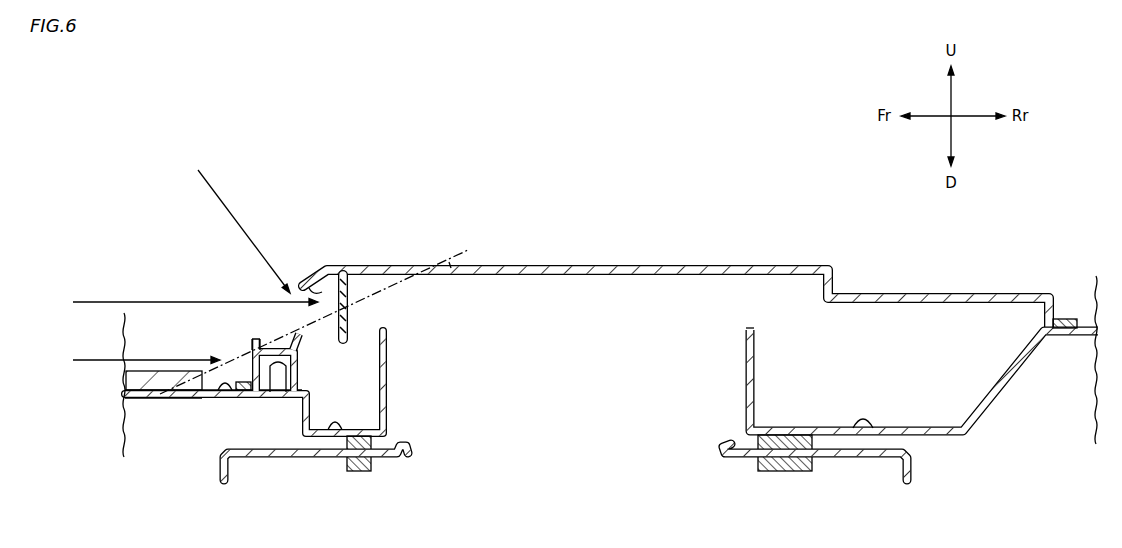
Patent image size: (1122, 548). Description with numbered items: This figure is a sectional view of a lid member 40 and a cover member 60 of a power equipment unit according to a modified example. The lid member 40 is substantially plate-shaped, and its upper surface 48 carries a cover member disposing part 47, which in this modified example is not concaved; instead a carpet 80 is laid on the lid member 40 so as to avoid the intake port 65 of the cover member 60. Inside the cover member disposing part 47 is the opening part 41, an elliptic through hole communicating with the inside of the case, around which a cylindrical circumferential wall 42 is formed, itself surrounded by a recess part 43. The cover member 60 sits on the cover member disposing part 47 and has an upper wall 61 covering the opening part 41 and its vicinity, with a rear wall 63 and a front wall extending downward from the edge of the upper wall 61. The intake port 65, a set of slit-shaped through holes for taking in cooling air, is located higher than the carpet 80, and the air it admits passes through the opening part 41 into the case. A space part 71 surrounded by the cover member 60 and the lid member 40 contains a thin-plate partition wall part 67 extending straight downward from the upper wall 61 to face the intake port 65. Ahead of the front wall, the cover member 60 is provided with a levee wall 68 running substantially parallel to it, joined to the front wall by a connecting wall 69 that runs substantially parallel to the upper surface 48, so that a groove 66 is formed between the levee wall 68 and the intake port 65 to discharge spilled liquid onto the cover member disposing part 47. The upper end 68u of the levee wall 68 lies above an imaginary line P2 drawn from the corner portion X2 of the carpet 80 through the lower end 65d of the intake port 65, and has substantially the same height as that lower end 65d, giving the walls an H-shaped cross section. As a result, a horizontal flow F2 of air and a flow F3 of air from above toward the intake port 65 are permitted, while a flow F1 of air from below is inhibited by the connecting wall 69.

The lid member 40 is at (254, 337).
The opening part 41 is at (747, 328).
The circumferential wall 42 is at (713, 384).
The recess part 43 is at (326, 432).
The cover member disposing part 47 is at (230, 398).
The upper surface 48 is at (158, 388).
The cover member 60 is at (675, 271).
The upper wall 61 is at (553, 264).
The rear wall 63 is at (1056, 319).
The intake port 65 is at (318, 265).
The lower end of the intake port 65d is at (290, 338).
The groove 66 is at (301, 347).
The partition wall part 67 is at (363, 265).
The levee wall 68 is at (271, 337).
The upper end of the levee wall 68u is at (254, 337).
The connecting wall 69 is at (278, 393).
The space part 71 is at (902, 358).
The carpet 80 is at (172, 390).
The flow of air from a lower side F1 is at (132, 360).
The flow of air in a horizontal direction F2 is at (181, 302).
The flow of air from the upper side F3 is at (240, 220).
The imaginary line P2 is at (449, 264).
The corner portion X2 is at (207, 366).